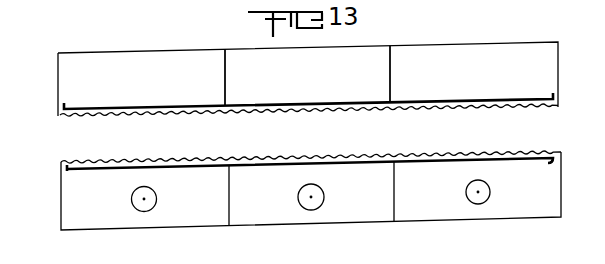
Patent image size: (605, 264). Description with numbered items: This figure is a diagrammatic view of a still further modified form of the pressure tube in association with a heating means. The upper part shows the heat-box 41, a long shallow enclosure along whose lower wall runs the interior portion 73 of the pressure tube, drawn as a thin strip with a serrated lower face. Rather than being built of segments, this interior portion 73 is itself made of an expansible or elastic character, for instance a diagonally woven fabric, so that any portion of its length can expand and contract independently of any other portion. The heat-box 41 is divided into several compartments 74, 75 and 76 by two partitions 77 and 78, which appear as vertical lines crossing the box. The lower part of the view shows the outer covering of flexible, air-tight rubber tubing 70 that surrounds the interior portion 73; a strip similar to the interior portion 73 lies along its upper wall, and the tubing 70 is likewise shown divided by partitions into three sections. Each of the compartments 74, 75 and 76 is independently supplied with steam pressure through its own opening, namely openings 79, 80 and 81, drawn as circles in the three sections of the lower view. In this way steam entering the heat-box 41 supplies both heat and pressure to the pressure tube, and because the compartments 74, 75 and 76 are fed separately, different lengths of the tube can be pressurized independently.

The heat-box 41 is at (559, 70).
The interior portion of the pressure tube 73 is at (62, 116).
The compartment 74 is at (141, 82).
The compartment 75 is at (307, 79).
The compartment 76 is at (474, 75).
The partition 77 is at (227, 77).
The partition 78 is at (392, 77).
The rubber tubing 70 is at (543, 159).
The opening 79 is at (146, 212).
The opening 80 is at (305, 208).
The opening 81 is at (478, 204).